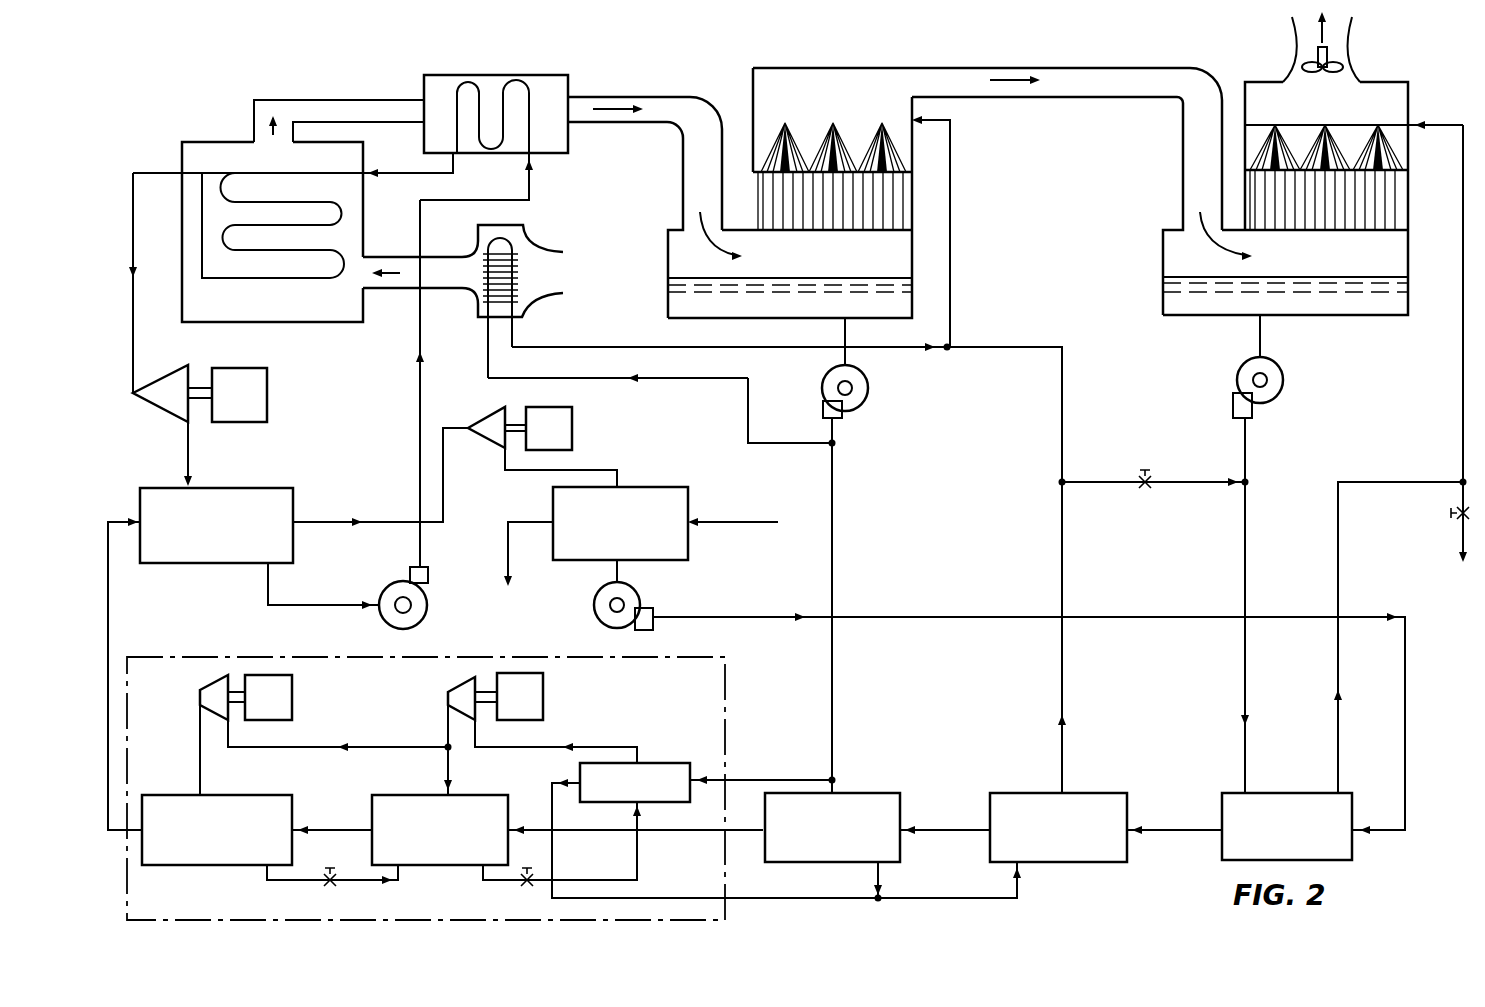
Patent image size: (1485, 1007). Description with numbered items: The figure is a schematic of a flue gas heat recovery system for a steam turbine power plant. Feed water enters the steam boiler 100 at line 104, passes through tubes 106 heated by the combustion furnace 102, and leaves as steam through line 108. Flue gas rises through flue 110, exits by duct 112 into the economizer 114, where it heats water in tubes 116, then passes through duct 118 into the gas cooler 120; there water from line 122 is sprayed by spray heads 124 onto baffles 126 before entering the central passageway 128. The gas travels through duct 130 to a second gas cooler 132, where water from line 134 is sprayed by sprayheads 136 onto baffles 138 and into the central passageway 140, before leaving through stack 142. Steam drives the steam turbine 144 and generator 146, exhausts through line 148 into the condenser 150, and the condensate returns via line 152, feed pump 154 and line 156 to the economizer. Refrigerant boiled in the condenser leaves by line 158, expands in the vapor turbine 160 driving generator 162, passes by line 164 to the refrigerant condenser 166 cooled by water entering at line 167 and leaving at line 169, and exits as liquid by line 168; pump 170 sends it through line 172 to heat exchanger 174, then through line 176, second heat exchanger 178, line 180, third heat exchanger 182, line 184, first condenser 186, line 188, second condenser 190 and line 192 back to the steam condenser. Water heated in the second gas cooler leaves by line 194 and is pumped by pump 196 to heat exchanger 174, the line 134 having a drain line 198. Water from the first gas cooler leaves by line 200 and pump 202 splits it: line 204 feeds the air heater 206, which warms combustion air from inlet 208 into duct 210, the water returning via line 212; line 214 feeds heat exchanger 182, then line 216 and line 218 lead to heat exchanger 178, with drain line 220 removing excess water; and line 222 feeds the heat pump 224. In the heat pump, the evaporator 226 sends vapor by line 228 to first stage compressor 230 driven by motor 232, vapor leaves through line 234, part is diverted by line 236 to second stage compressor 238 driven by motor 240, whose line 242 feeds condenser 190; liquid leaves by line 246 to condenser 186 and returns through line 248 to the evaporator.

The steam boiler 100 is at (182, 142).
The combustion furnace 102 is at (310, 322).
The feed water line 104 is at (393, 168).
The boiler tubes 106 is at (235, 173).
The steam line 108 is at (135, 330).
The flue 110 is at (270, 110).
The duct 112 is at (335, 100).
The economizer 114 is at (518, 75).
The economizer tubes 116 is at (470, 90).
The duct 118 is at (665, 97).
The gas cooler 120 is at (912, 208).
The line 122 is at (950, 148).
The spray heads 124 is at (782, 120).
The baffles 126 is at (833, 185).
The central passageway 128 is at (897, 265).
The duct 130 is at (1030, 68).
The second gas cooler 132 is at (1408, 260).
The line 134 is at (1463, 125).
The sprayheads 136 is at (1275, 125).
The baffles 138 is at (1390, 187).
The central passageway 140 is at (1395, 236).
The stack 142 is at (1348, 35).
The steam turbine 144 is at (160, 405).
The generator 146 is at (270, 392).
The line 148 is at (185, 445).
The condenser 150 is at (275, 488).
The line 152 is at (352, 606).
The feed pump 154 is at (428, 580).
The line 156 is at (422, 340).
The line 158 is at (400, 522).
The vapor turbine 160 is at (480, 422).
The generator 162 is at (572, 420).
The line 164 is at (617, 470).
The refrigerant condenser 166 is at (678, 487).
The line 167 is at (778, 525).
The line 169 is at (520, 520).
The line 168 is at (638, 590).
The pump 170 is at (594, 608).
The line 172 is at (1285, 617).
The heat exchanger 174 is at (1355, 858).
The line 176 is at (1180, 832).
The second heat exchanger 178 is at (1060, 865).
The line 180 is at (925, 828).
The third heat exchanger 182 is at (860, 793).
The line 184 is at (605, 832).
The first condenser 186 is at (440, 865).
The line 188 is at (372, 825).
The second condenser 190 is at (275, 795).
The line 192 is at (108, 622).
The line 194 is at (1260, 345).
The pump 196 is at (1283, 380).
The drain line 198 is at (1455, 507).
The line 200 is at (850, 368).
The pump 202 is at (822, 388).
The line 204 is at (748, 395).
The air heater 206 is at (523, 227).
The inlet 208 is at (560, 252).
The duct 210 is at (450, 257).
The line 212 is at (947, 350).
The line 214 is at (832, 780).
The line 216 is at (875, 882).
The line 218 is at (985, 898).
The line 220 is at (1118, 482).
The line 222 is at (810, 780).
The heat pump 224 is at (725, 712).
The evaporator 226 is at (660, 763).
The line 228 is at (637, 745).
The first stage compressor 230 is at (475, 680).
The motor 232 is at (543, 680).
The line 234 is at (446, 745).
The line 236 is at (330, 747).
The second stage compressor 238 is at (228, 675).
The motor 240 is at (292, 692).
The line 242 is at (200, 740).
The line 246 is at (267, 880).
The line 248 is at (637, 858).